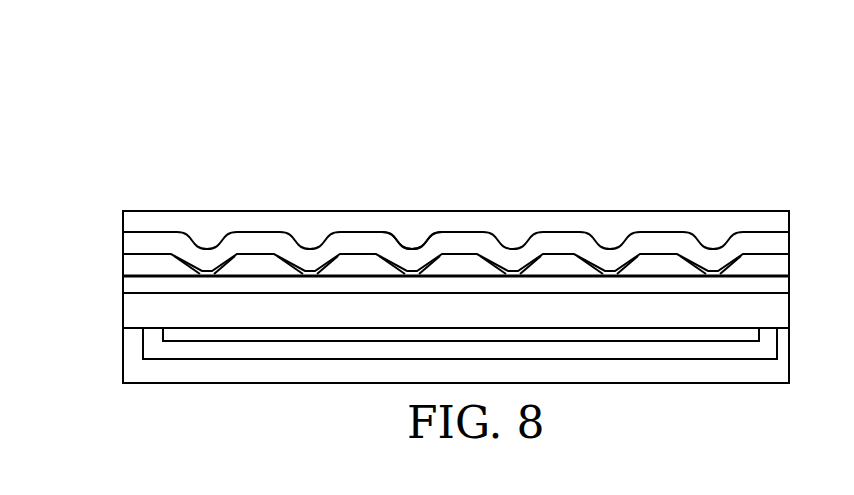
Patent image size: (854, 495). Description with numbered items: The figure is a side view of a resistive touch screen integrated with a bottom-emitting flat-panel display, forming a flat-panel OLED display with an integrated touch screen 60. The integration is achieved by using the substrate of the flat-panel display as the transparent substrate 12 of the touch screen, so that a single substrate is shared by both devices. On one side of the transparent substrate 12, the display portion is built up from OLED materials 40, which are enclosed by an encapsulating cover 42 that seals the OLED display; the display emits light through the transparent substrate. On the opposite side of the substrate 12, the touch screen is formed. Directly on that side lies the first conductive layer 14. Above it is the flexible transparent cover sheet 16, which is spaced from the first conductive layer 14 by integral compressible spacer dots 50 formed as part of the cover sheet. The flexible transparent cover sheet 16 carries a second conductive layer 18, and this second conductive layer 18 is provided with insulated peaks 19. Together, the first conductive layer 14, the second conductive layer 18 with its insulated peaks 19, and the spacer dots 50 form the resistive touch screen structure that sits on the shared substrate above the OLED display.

The transparent substrate 12 is at (136, 319).
The first conductive layer 14 is at (136, 285).
The flexible transparent cover sheet 16 is at (158, 221).
The second conductive layer 18 is at (136, 245).
The insulated peaks 19 is at (322, 249).
The OLED materials 40 is at (632, 342).
The encapsulating cover 42 is at (268, 383).
The integral compressible spacer dots 50 is at (413, 247).
The flat-panel OLED display with an integrated touch screen 60 is at (643, 162).